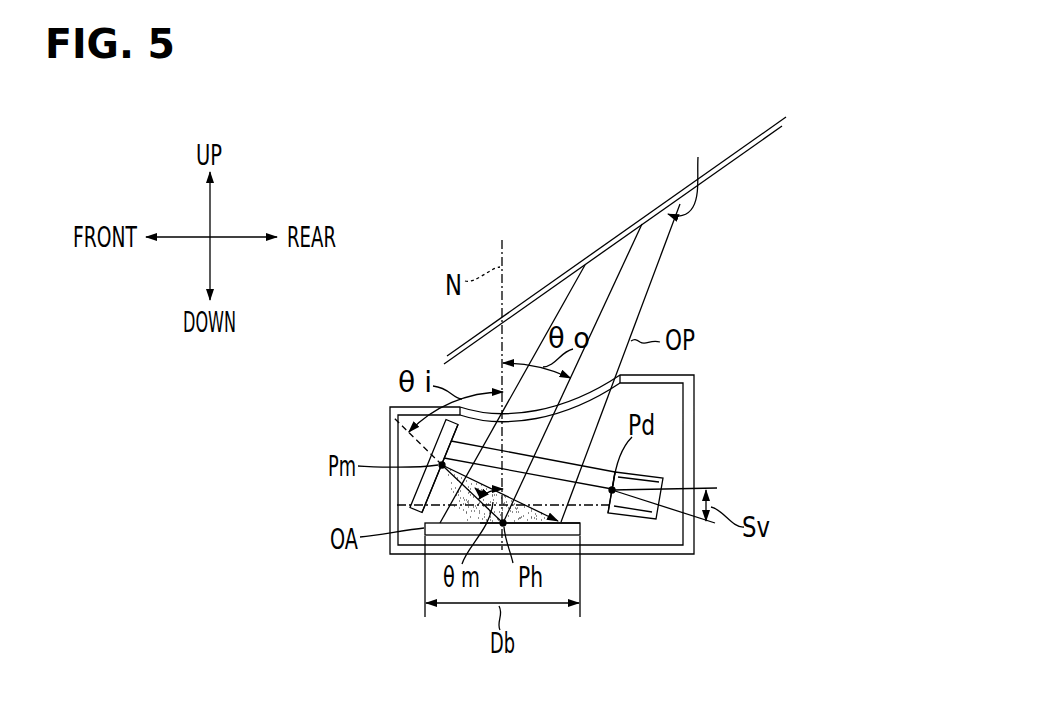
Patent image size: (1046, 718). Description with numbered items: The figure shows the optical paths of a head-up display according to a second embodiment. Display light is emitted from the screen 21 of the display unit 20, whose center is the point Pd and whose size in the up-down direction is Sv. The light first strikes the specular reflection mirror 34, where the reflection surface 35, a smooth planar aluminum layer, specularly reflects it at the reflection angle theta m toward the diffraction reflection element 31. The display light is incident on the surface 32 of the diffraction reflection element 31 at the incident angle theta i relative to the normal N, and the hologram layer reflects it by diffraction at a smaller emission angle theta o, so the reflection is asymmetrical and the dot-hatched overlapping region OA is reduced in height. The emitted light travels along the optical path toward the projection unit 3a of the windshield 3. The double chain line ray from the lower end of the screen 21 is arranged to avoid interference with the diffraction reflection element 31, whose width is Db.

The windshield 3 is at (727, 157).
The projection unit 3a is at (690, 171).
The display unit 20 is at (655, 467).
The screen 21 is at (592, 500).
The diffraction reflection element 31 is at (424, 533).
The surface 32 is at (581, 535).
The specular reflection mirror 34 is at (413, 491).
The reflection surface 35 is at (463, 442).